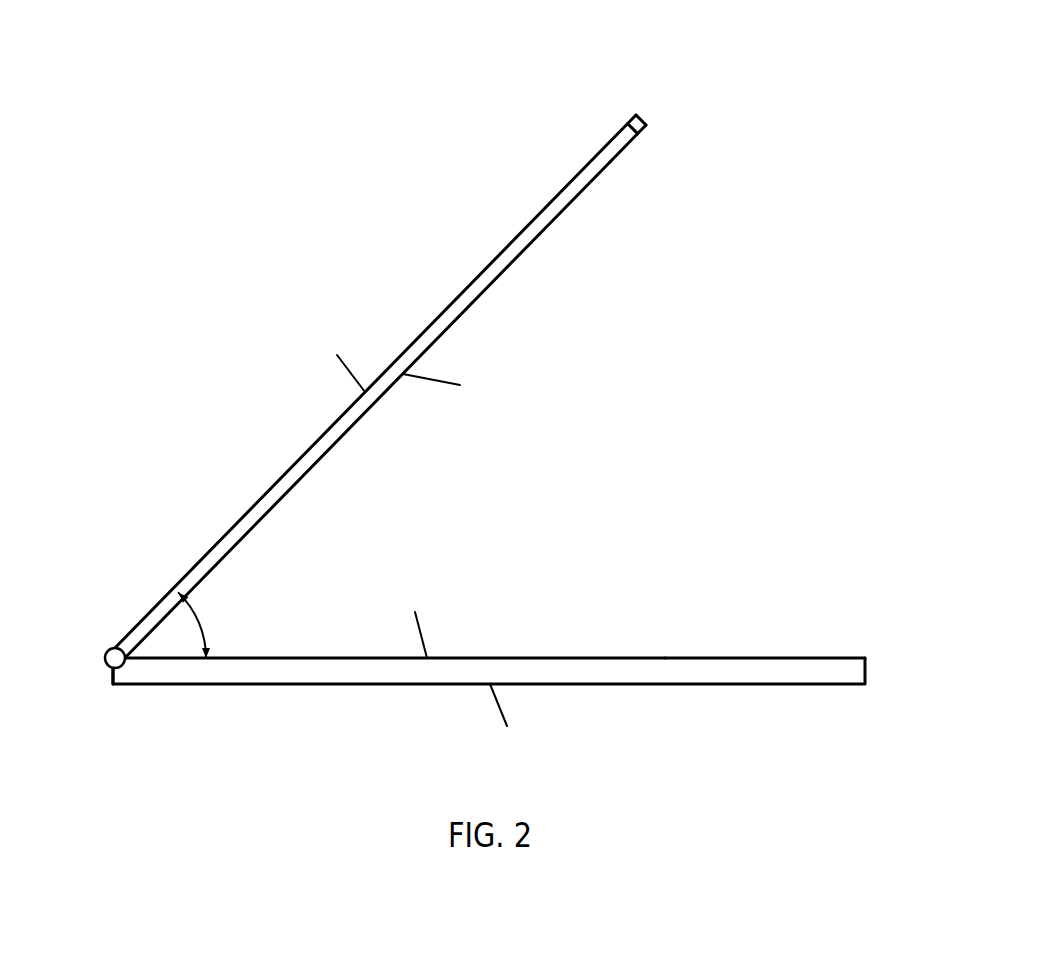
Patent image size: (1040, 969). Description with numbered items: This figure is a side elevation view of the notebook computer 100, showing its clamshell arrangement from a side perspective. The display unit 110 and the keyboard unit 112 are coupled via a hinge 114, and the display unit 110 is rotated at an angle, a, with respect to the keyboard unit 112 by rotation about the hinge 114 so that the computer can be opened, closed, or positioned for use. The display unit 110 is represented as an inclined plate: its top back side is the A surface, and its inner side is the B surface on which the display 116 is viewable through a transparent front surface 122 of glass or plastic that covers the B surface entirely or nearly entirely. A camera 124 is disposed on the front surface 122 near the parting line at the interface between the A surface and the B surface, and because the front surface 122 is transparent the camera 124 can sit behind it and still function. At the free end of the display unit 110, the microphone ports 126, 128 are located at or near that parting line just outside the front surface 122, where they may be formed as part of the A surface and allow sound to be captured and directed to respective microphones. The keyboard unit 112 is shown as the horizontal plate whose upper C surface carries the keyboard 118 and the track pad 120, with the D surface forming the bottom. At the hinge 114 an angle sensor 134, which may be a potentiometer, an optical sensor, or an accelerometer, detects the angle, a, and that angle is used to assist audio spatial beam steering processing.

The notebook computer 100 is at (957, 140).
The display unit 110 is at (612, 139).
The keyboard unit 112 is at (852, 658).
The hinge 114 is at (105, 656).
The display 116 is at (566, 210).
The keyboard 118 is at (590, 658).
The track pad 120 is at (740, 658).
The front surface 122 is at (518, 259).
The camera 124 is at (645, 133).
The microphone port 126 is at (646, 121).
The microphone port 128 is at (633, 129).
The angle sensor 134 is at (110, 670).